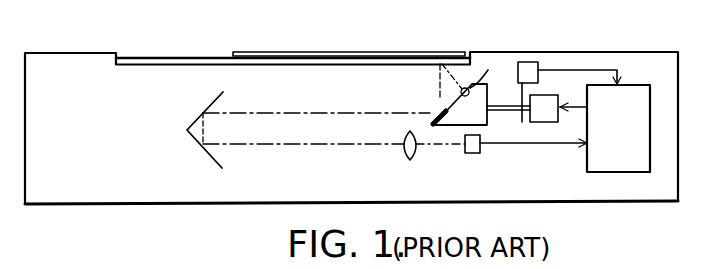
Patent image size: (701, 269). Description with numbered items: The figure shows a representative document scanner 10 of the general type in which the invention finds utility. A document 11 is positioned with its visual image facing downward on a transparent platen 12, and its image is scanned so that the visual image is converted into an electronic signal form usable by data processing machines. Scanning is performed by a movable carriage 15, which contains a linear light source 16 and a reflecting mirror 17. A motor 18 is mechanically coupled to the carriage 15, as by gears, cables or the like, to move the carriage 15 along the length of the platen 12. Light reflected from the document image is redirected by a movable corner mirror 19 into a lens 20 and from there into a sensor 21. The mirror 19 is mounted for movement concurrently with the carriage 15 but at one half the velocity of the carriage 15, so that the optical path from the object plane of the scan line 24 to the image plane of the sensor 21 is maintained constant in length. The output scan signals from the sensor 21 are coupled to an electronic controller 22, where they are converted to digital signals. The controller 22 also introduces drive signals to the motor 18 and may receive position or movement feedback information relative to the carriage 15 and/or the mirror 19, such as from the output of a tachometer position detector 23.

The scanner 10 is at (188, 35).
The document 11 is at (308, 53).
The transparent platen 12 is at (215, 56).
The movable carriage 15 is at (488, 85).
The linear light source 16 is at (473, 90).
The reflecting mirror 17 is at (440, 100).
The motor 18 is at (550, 95).
The movable corner mirror 19 is at (213, 157).
The lens 20 is at (405, 157).
The sensor 21 is at (472, 153).
The electronic controller 22 is at (634, 135).
The tachometer position detector 23 is at (540, 63).
The scan line 24 is at (438, 63).